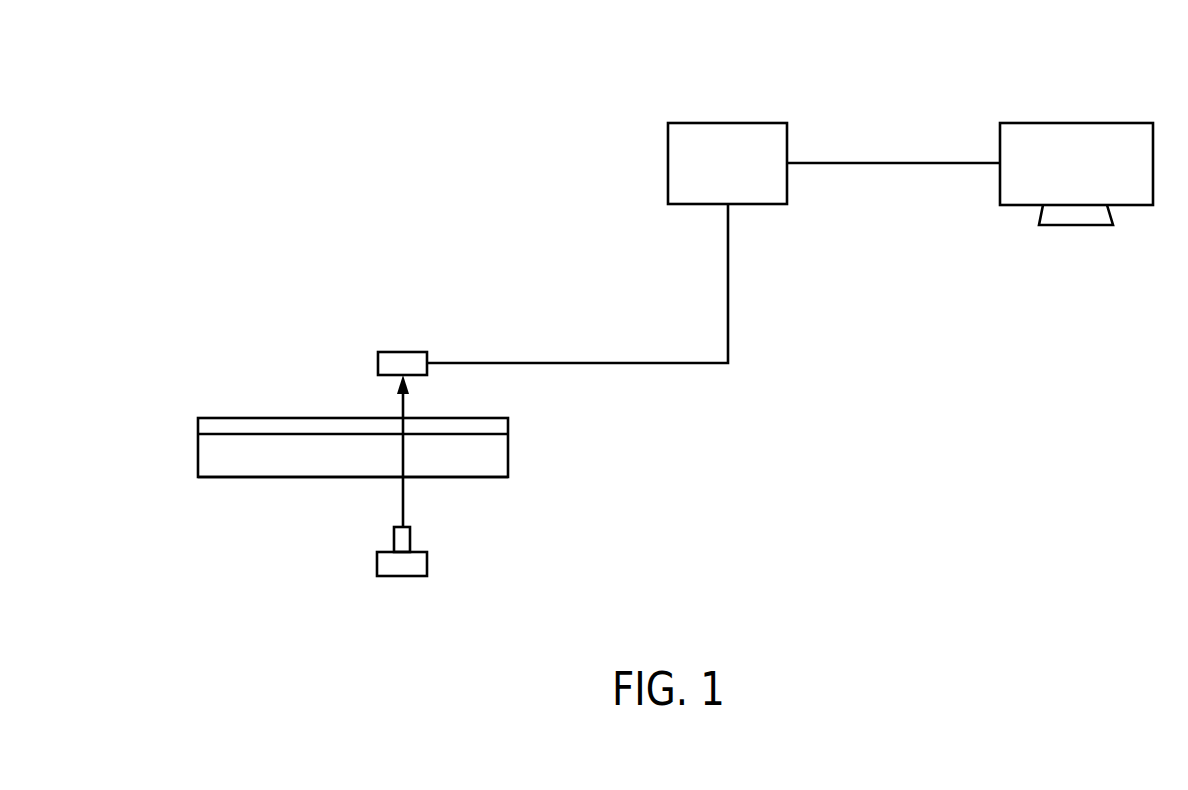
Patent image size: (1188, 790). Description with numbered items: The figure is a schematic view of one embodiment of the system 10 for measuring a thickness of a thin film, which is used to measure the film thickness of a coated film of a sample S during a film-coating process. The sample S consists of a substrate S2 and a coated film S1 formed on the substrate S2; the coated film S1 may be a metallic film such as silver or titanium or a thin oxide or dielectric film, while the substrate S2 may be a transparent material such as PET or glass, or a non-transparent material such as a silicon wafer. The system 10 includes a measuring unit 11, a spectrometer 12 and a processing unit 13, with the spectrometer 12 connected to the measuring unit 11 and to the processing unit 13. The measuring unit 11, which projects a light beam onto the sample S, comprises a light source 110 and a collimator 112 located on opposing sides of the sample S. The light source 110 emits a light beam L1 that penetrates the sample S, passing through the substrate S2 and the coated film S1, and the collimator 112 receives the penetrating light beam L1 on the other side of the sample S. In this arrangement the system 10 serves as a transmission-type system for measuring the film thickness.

The system for measuring a thickness of a thin film 10 is at (147, 72).
The measuring unit 11 is at (260, 287).
The light source 110 is at (390, 570).
The collimator 112 is at (390, 350).
The light beam L1 is at (403, 502).
The spectrometer 12 is at (695, 122).
The processing unit 13 is at (1037, 122).
The sample S is at (150, 447).
The coated film S1 is at (216, 422).
The substrate S2 is at (216, 472).